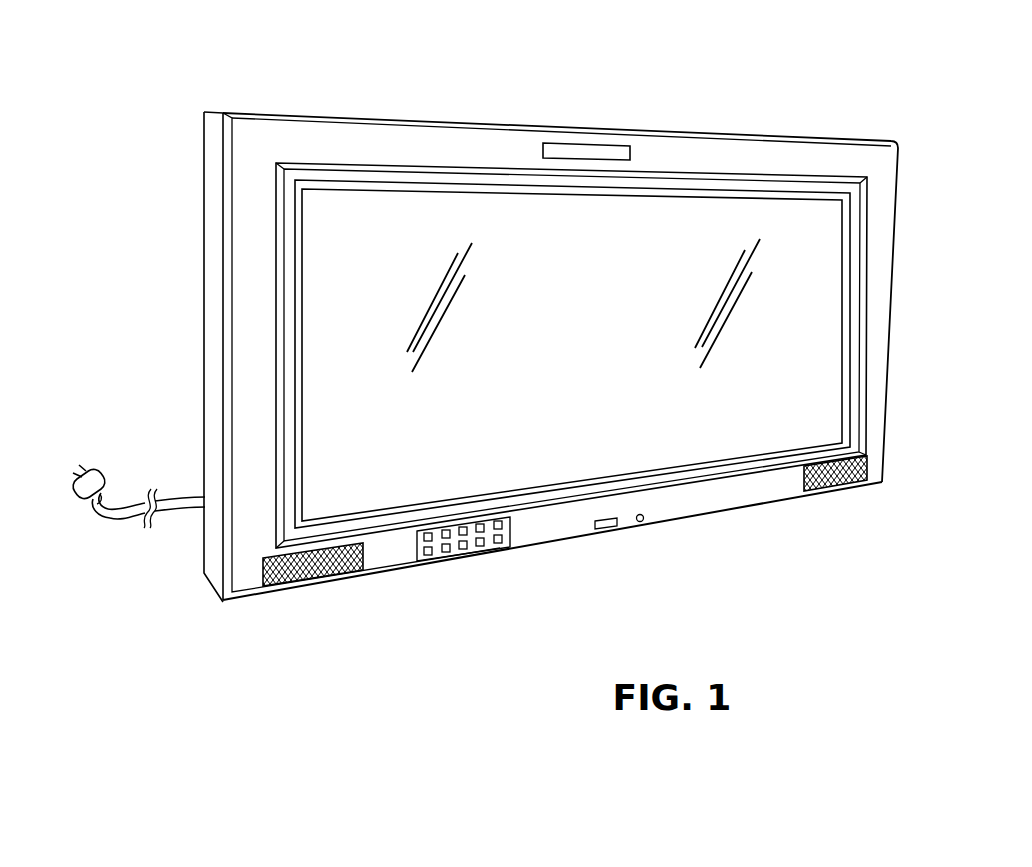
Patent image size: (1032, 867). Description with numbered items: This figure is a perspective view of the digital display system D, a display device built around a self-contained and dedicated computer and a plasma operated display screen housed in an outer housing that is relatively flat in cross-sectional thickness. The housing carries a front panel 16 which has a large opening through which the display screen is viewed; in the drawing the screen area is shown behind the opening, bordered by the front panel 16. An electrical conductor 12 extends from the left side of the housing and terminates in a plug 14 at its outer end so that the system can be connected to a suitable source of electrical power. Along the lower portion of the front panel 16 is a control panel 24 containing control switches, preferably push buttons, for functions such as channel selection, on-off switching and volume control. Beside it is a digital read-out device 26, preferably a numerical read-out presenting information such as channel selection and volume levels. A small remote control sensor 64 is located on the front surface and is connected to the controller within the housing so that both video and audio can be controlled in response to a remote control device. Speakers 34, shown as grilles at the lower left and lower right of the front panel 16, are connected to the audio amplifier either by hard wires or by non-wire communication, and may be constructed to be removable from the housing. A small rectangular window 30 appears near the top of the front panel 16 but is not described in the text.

The electrical conductor 12 is at (180, 495).
The plug 14 is at (125, 506).
The front panel 16 is at (360, 115).
The control panel 24 is at (460, 558).
The digital read-out device 26 is at (610, 530).
The sensor window 30 is at (590, 150).
The speakers 34 is at (327, 580).
The remote control sensor 64 is at (645, 525).
The digital display system D is at (962, 150).